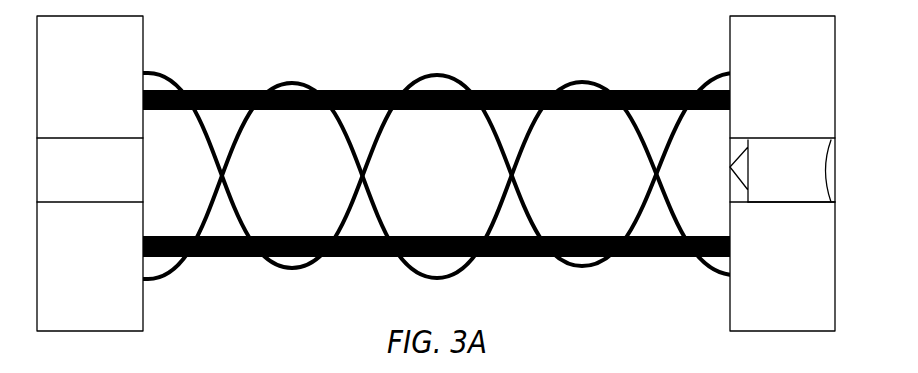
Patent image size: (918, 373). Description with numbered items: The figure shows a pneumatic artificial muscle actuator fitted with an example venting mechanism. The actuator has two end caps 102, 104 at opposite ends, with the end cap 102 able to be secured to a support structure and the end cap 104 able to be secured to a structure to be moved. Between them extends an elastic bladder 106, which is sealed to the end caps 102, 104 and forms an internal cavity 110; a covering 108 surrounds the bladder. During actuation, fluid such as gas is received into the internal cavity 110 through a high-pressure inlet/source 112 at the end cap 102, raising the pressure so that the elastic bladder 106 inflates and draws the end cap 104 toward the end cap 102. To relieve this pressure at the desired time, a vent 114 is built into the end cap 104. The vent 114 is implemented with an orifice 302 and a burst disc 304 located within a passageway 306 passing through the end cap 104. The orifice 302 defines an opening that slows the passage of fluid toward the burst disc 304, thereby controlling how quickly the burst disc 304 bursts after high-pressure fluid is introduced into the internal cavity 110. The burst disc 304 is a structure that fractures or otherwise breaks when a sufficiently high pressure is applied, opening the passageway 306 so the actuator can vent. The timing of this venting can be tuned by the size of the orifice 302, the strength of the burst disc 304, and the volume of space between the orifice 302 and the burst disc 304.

The end cap 102 is at (144, 319).
The end cap 104 is at (730, 315).
The elastic bladder 106 is at (213, 89).
The covering 108 is at (437, 75).
The internal cavity 110 is at (447, 176).
The high-pressure inlet/source 112 is at (53, 138).
The vent 114 is at (754, 120).
The orifice 302 is at (730, 165).
The burst disc 304 is at (819, 141).
The passageway 306 is at (805, 202).